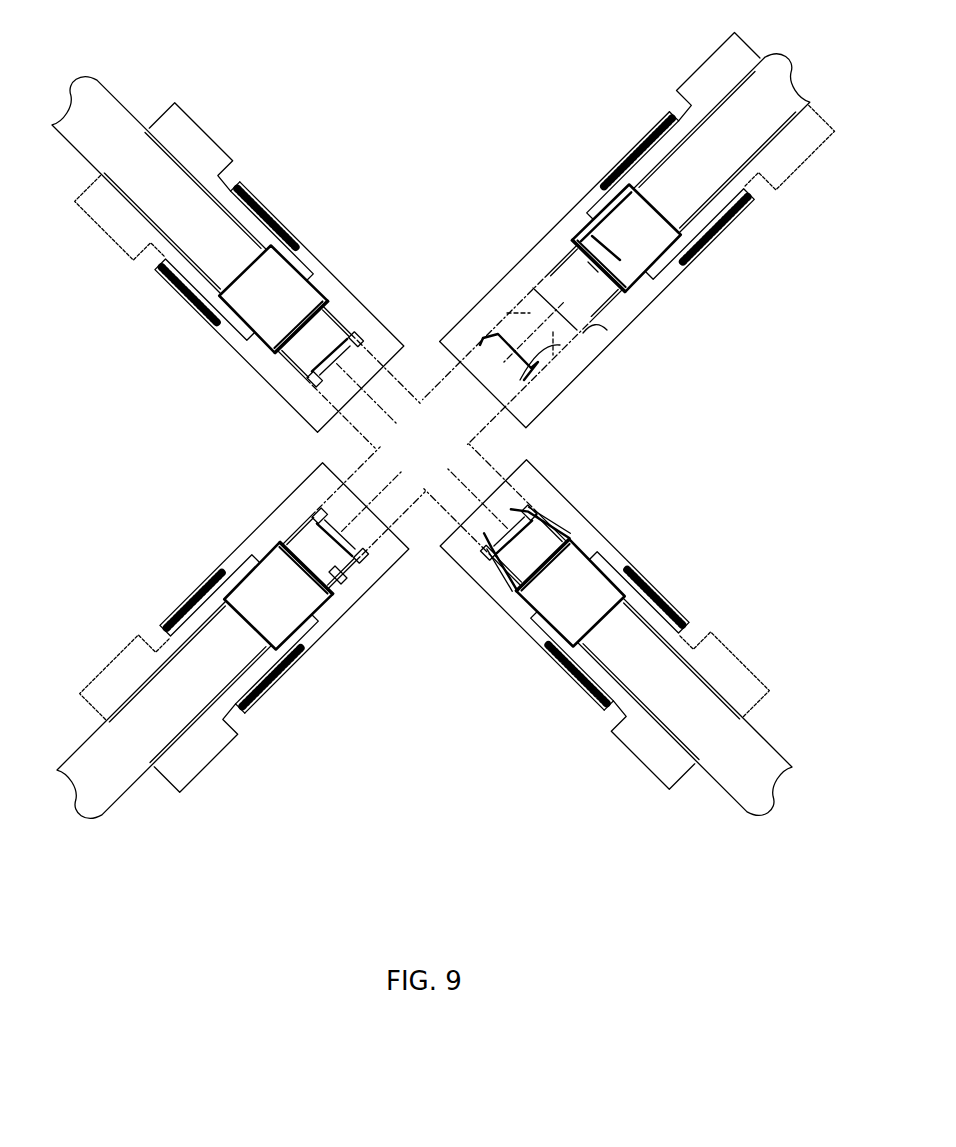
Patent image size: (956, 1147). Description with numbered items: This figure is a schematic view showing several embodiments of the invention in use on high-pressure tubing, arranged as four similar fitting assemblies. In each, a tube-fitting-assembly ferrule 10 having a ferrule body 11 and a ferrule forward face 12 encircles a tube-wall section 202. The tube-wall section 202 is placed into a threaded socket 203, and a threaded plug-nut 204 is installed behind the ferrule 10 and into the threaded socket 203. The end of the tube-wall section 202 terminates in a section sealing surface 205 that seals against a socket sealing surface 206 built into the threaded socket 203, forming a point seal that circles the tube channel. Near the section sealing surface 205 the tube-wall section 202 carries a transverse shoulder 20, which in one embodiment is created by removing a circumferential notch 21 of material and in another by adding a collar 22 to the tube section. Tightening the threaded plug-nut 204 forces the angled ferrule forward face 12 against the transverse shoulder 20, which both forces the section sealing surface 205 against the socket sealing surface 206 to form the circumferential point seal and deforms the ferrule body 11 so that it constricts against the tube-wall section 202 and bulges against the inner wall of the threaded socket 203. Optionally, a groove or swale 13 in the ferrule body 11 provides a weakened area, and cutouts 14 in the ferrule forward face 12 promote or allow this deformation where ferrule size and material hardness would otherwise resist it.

The tube-fitting-assembly ferrule 10 is at (333, 223).
The ferrule body 11 is at (283, 307).
The ferrule forward face 12 is at (262, 350).
The groove or swale 13 is at (591, 232).
The cutouts 14 is at (596, 270).
The transverse shoulder 20 is at (284, 352).
The circumferential notch 21 is at (592, 330).
The collar 22 is at (345, 576).
The tube-wall section 202 is at (100, 85).
The threaded socket 203 is at (266, 204).
The threaded plug-nut 204 is at (193, 125).
The section sealing surface 205 is at (350, 336).
The socket sealing surface 206 is at (356, 345).